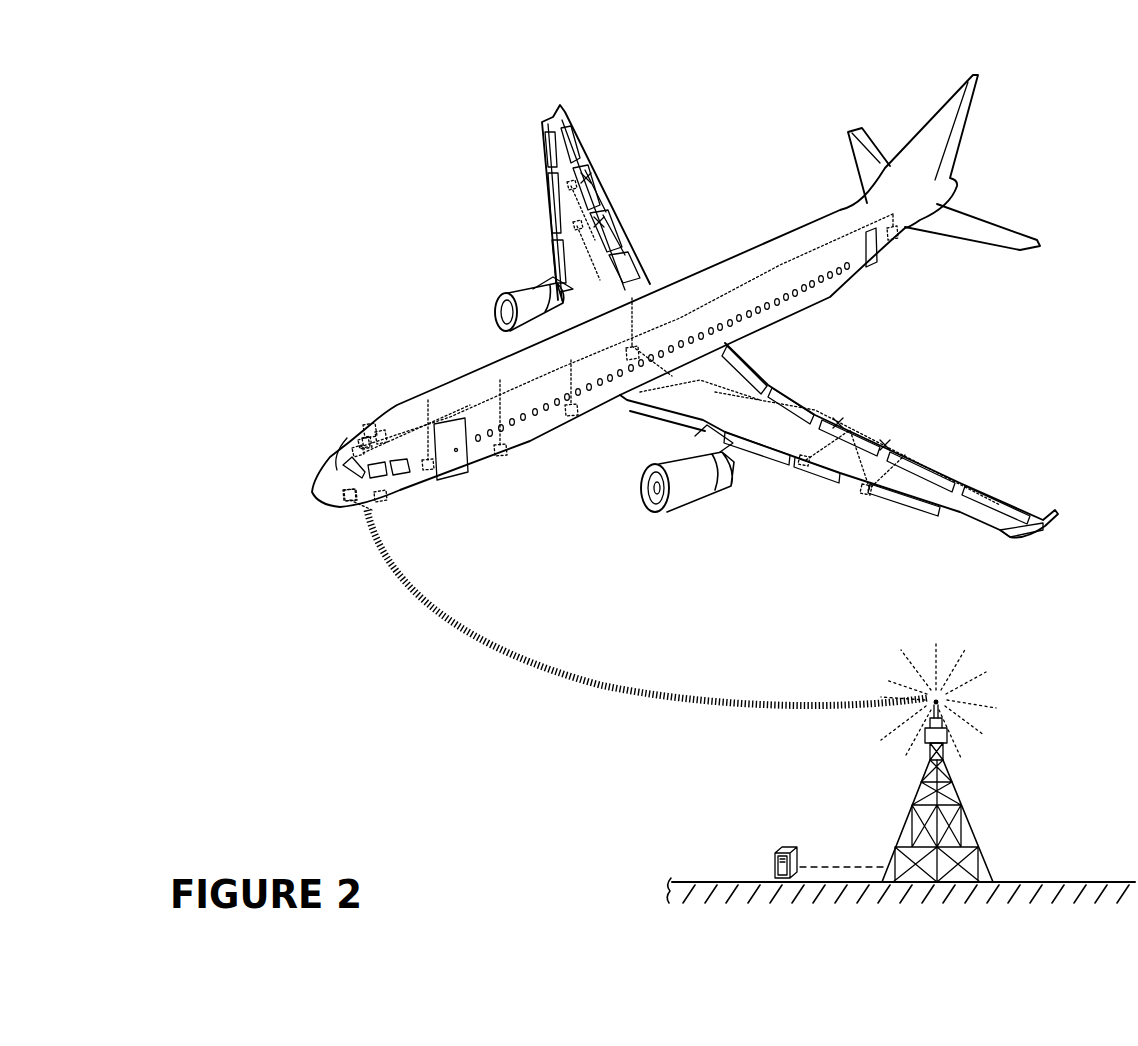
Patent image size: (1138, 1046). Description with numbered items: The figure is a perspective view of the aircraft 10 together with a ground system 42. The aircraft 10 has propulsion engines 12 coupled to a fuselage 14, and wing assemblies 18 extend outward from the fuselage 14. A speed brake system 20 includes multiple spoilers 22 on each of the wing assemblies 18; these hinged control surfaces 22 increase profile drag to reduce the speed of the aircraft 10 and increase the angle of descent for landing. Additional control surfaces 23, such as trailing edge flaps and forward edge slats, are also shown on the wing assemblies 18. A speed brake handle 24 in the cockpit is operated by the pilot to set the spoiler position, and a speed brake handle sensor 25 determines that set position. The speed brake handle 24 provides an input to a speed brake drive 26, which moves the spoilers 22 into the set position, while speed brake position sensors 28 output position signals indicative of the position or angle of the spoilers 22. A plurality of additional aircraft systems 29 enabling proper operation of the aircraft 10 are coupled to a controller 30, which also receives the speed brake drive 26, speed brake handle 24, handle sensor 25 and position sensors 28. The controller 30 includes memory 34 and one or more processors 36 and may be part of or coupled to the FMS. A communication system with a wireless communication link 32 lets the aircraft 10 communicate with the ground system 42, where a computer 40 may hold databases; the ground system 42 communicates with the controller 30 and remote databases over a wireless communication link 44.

The aircraft 10 is at (318, 467).
The propulsion engines 12 is at (520, 296).
The fuselage 14 is at (490, 358).
The wing assemblies 18 is at (556, 148).
The speed brake system 20 is at (612, 199).
The spoilers 22 is at (598, 186).
The additional control surfaces 23 is at (576, 152).
The speed brake handle 24 is at (370, 437).
The speed brake handle sensor 25 is at (362, 440).
The speed brake drive 26 is at (624, 380).
The speed brake position sensors 28 is at (570, 187).
The aircraft systems 29 is at (893, 238).
The controller 30 is at (383, 437).
The wireless communication link 32 is at (350, 500).
The memory 34 is at (377, 437).
The processors 36 is at (357, 455).
The computer 40 is at (775, 850).
The ground system 42 is at (968, 790).
The wireless communication link 44 is at (930, 698).